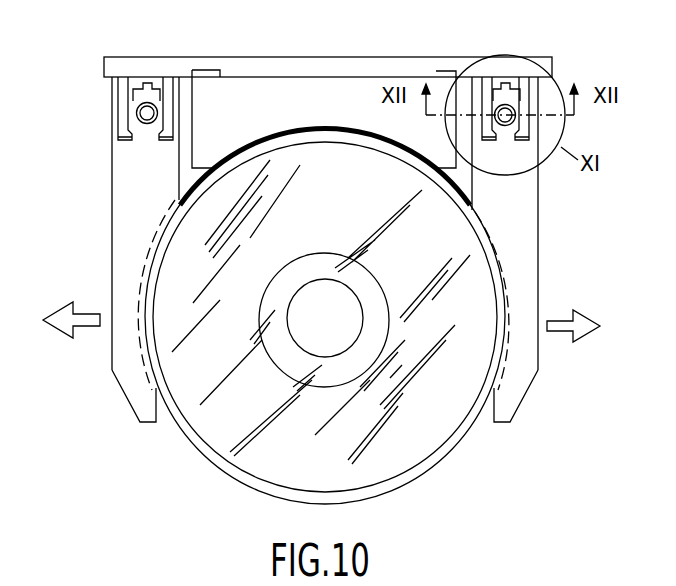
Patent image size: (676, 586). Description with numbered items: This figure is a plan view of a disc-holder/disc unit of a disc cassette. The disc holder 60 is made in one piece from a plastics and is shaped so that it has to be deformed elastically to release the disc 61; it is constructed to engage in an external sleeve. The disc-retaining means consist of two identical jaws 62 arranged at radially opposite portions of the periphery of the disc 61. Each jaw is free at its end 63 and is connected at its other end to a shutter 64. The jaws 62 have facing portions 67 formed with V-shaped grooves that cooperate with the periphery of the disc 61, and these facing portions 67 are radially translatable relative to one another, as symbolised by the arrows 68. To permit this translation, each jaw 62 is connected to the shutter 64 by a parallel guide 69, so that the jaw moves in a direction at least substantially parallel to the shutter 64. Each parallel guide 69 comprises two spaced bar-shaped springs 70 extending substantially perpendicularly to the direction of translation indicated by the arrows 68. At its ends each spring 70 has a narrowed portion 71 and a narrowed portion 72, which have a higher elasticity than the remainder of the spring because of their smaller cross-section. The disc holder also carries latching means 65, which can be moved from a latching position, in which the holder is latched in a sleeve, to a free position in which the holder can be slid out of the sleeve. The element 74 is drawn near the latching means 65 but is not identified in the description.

The disc holder 60 is at (521, 53).
The disc 61 is at (435, 422).
The jaws 62 is at (122, 222).
The free ends 63 is at (143, 412).
The shutter 64 is at (262, 57).
The latching means 65 is at (140, 93).
The facing portions 67 is at (150, 250).
The arrows 68 is at (60, 328).
The parallel guides 69 is at (325, 124).
The bar-shaped springs 70 is at (118, 113).
The narrowed portion 71 is at (181, 77).
The narrowed portion 72 is at (173, 135).
The pin 74 is at (146, 117).